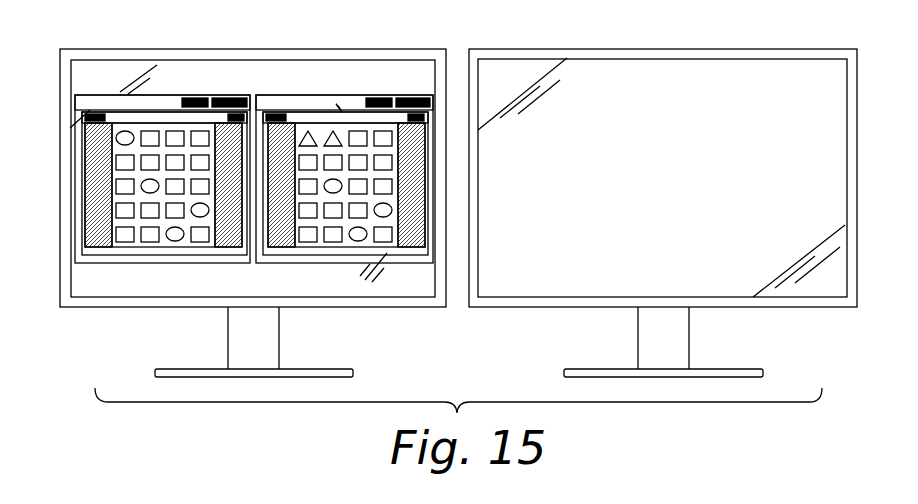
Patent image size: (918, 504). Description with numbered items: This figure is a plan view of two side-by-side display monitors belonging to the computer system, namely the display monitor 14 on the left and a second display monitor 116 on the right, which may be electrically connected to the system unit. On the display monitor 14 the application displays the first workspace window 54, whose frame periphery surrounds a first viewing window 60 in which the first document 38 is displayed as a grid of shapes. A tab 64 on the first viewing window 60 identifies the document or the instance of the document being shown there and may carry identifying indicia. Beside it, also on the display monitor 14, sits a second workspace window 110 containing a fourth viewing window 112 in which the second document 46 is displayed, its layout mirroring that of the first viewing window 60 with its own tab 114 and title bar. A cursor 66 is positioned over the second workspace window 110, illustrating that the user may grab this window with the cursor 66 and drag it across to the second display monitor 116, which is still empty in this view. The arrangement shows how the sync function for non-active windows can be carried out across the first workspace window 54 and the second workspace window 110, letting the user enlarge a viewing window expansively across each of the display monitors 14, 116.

The display monitor 14 is at (197, 50).
The second display monitor 116 is at (648, 48).
The first document 38 is at (120, 173).
The second document 46 is at (388, 173).
The workspace window 54 is at (163, 100).
The first viewing window 60 is at (143, 120).
The tab 64 is at (93, 120).
The cursor 66 is at (338, 107).
The second workspace window 110 is at (357, 98).
The fourth viewing window 112 is at (393, 118).
The button 114 is at (278, 113).